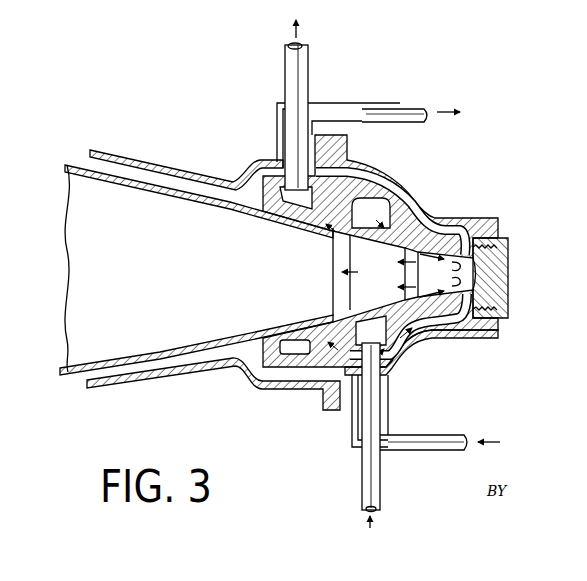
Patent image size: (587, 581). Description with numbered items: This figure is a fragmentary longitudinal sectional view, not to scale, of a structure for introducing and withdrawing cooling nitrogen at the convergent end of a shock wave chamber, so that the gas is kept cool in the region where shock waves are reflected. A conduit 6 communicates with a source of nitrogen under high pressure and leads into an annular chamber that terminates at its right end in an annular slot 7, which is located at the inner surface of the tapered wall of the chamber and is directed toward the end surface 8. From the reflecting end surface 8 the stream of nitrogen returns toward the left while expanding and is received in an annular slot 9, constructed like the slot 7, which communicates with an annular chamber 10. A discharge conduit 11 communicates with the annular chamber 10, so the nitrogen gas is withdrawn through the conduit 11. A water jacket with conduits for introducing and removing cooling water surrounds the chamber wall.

The conduit 6 is at (370, 472).
The annular slot 7 is at (400, 254).
The end surface 8 is at (480, 272).
The annular slot 9 is at (333, 256).
The annular chamber 10 is at (291, 340).
The discharge conduit 11 is at (292, 63).